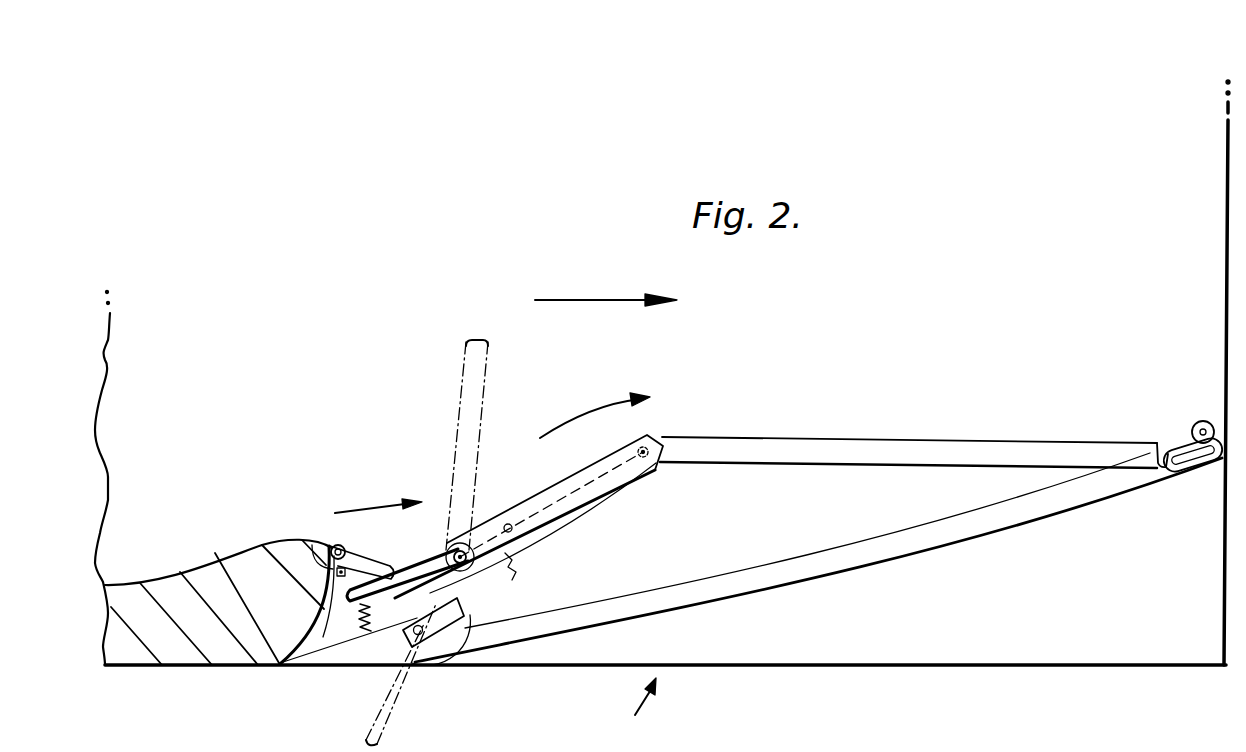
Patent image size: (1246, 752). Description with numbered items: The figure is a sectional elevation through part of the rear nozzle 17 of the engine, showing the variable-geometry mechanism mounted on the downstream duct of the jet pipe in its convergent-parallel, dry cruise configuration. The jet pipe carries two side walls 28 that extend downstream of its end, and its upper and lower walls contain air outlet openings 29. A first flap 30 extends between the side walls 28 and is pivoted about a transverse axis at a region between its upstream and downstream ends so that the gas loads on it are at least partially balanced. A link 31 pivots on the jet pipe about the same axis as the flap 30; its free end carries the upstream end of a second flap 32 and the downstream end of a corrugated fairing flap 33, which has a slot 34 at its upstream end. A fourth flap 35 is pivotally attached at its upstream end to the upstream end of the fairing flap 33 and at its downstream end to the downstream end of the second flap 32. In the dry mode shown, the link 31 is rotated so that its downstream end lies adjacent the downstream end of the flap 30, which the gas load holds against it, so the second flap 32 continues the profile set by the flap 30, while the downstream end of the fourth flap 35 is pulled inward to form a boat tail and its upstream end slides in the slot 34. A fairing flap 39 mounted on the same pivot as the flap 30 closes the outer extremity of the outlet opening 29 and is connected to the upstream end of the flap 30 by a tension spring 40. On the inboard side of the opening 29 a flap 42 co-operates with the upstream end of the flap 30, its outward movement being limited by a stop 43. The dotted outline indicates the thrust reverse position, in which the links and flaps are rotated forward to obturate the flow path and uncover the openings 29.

The nozzle 17 is at (655, 712).
The side walls 28 is at (1145, 607).
The air outlet openings 29 is at (323, 636).
The first flaps 30 is at (533, 507).
The links 31 is at (562, 505).
The second flaps 32 is at (840, 447).
The fairing flaps 33 is at (525, 563).
The slot 34 is at (462, 625).
The fourth flap 35 is at (891, 553).
The fairing flaps 39 is at (386, 622).
The tension springs 40 is at (345, 620).
The flaps 42 is at (357, 565).
The stops 43 is at (318, 546).